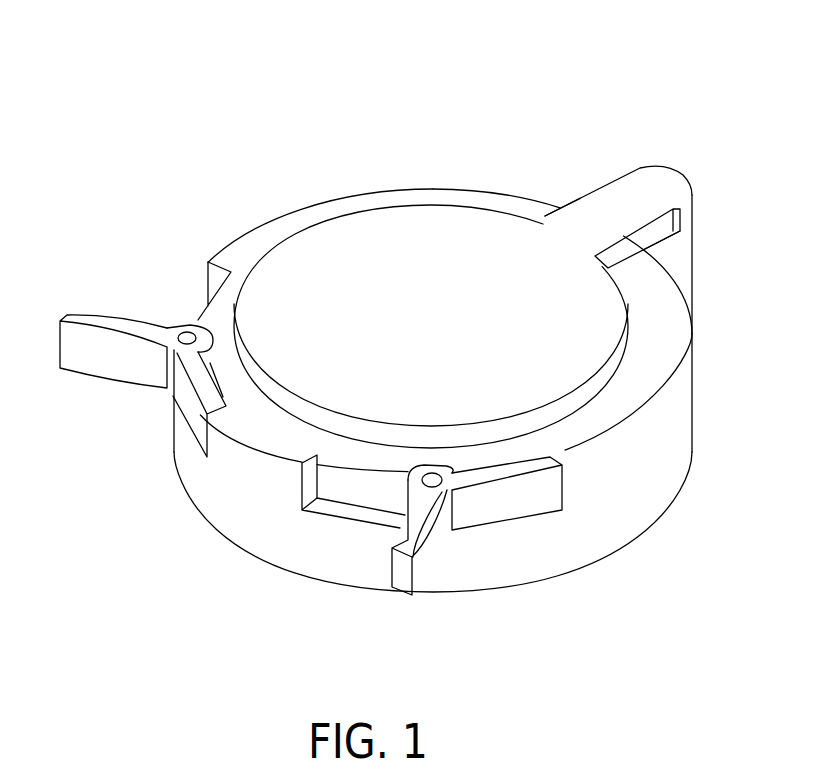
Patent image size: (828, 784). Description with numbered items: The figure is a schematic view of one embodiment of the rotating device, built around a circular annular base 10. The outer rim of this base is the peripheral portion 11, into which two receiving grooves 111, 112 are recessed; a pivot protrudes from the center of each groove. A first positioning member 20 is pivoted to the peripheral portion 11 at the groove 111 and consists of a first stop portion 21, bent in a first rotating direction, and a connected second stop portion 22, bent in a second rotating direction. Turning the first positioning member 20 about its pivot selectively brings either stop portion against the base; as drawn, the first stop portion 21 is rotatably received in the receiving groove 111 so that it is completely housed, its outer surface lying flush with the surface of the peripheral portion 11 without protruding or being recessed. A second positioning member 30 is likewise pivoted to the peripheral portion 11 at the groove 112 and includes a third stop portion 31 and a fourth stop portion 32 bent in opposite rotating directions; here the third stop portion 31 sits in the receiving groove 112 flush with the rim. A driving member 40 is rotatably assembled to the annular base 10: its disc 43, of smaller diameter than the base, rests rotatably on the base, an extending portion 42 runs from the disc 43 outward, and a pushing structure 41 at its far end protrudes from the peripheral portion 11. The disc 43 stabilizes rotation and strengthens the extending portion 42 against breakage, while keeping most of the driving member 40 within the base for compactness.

The annular base 10 is at (293, 226).
The peripheral portion 11 is at (228, 505).
The receiving groove 111 is at (201, 300).
The receiving groove 112 is at (328, 508).
The first positioning member 20 is at (138, 402).
The first stop portion 21 is at (175, 391).
The second stop portion 22 is at (78, 356).
The second positioning member 30 is at (488, 571).
The third stop portion 31 is at (538, 503).
The fourth stop portion 32 is at (423, 550).
The driving member 40 is at (581, 138).
The pushing structure 41 is at (662, 253).
The extending portion 42 is at (590, 213).
The disc 43 is at (529, 169).